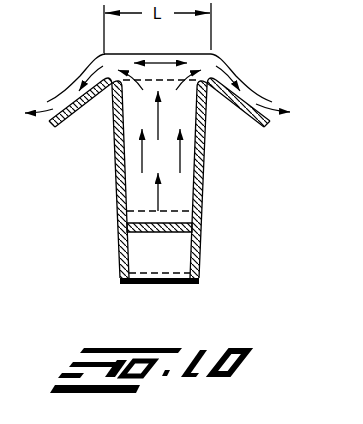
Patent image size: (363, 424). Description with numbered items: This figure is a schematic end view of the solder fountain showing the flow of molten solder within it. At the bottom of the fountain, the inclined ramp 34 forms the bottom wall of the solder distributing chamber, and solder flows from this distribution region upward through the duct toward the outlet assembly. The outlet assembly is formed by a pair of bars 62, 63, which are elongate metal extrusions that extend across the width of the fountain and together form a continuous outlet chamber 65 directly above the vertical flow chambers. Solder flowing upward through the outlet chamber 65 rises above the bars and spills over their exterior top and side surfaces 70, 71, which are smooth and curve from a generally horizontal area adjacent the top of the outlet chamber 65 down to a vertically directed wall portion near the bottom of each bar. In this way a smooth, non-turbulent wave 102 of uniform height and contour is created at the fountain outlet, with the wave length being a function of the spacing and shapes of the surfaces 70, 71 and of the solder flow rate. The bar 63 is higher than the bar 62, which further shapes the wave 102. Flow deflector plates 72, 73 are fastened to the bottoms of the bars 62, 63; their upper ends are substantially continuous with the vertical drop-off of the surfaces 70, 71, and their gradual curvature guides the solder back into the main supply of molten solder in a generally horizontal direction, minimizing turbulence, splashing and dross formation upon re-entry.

The inclined ramp 34 is at (176, 189).
The bar 62 is at (90, 83).
The bar 63 is at (222, 79).
The outlet chamber 65 is at (112, 107).
The exterior top and side surface 70 is at (103, 54).
The exterior top and side surface 71 is at (209, 78).
The flow deflector plate 72 is at (59, 130).
The flow deflector plate 73 is at (267, 128).
The wave 102 is at (156, 53).